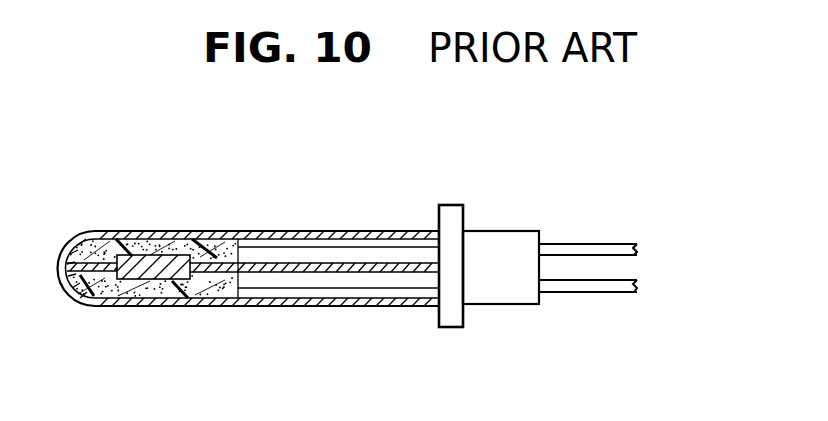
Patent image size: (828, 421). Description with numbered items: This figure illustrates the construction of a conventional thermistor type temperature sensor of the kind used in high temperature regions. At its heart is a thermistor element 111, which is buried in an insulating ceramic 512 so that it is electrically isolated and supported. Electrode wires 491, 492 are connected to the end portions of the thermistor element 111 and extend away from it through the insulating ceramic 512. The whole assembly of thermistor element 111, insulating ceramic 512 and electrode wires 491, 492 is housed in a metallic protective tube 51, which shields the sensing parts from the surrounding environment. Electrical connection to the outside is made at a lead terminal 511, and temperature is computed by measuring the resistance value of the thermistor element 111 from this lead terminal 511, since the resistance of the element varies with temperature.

The metallic protective tube 51 is at (328, 307).
The lead terminal 511 is at (605, 246).
The insulating ceramic 512 is at (208, 288).
The thermistor element 111 is at (145, 279).
The electrode wire 491 is at (97, 263).
The electrode wire 492 is at (222, 267).